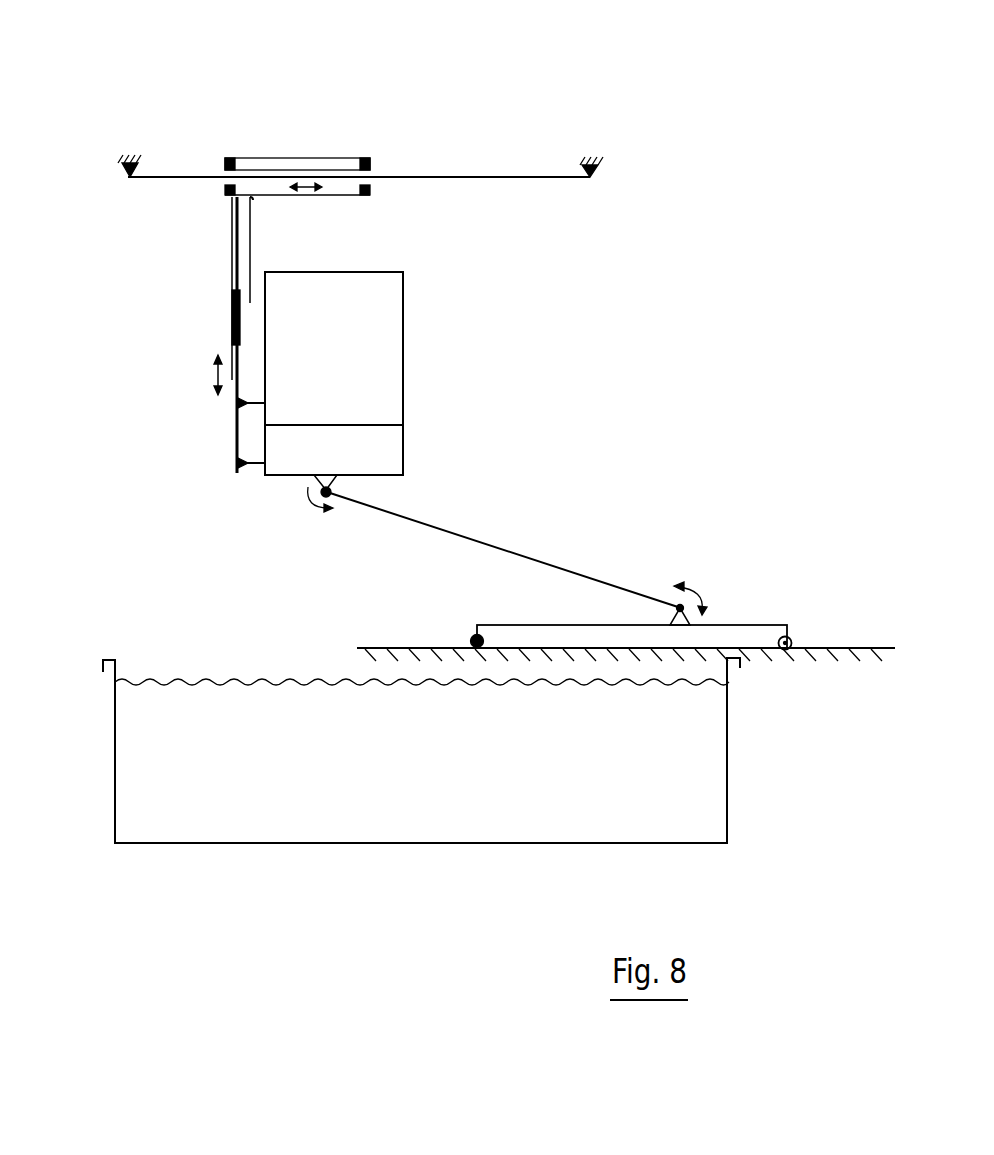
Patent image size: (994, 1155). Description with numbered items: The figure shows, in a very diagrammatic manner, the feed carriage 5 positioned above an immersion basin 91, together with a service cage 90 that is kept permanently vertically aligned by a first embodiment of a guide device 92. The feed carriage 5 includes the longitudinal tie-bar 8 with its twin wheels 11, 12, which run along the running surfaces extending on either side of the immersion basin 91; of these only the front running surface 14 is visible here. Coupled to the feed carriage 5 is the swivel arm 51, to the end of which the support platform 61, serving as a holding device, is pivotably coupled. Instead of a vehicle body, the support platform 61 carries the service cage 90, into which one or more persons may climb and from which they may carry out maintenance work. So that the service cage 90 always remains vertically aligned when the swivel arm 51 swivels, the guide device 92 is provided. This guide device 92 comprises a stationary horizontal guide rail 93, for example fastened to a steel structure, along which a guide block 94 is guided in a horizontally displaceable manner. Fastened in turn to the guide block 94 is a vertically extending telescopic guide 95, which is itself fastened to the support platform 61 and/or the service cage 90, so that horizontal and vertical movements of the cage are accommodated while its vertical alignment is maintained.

The feed carriage 5 is at (662, 505).
The longitudinal tie-bar 8 is at (740, 610).
The twin wheel 11 is at (787, 650).
The twin wheel 12 is at (477, 650).
The front running surface 14 is at (852, 648).
The swivel arm 51 is at (520, 550).
The support platform 61 is at (385, 447).
The service cage 90 is at (355, 347).
The immersion basin 91 is at (283, 768).
The guide device 92 is at (185, 295).
The horizontal guide rail 93 is at (475, 177).
The guide block 94 is at (292, 157).
The telescopic guide 95 is at (232, 322).